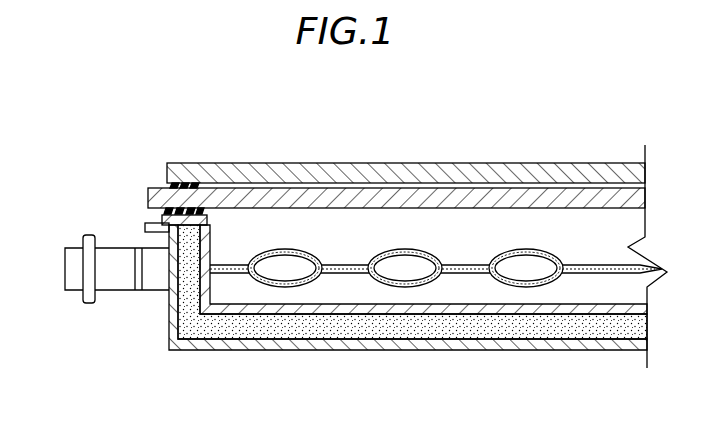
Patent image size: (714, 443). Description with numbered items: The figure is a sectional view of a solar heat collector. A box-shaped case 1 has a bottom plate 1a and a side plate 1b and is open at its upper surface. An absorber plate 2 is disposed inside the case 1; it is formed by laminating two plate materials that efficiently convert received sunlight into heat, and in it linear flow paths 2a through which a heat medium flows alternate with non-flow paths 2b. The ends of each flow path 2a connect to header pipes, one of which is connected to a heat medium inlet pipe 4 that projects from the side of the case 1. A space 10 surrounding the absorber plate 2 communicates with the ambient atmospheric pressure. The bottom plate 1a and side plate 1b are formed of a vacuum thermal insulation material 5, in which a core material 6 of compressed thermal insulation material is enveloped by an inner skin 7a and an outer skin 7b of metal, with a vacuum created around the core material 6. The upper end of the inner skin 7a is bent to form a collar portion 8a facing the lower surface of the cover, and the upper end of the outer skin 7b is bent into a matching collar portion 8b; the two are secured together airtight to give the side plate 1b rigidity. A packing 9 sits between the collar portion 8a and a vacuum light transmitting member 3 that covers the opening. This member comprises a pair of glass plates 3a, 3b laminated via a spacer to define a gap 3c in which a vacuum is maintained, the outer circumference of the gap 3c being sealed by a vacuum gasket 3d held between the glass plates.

The case 1 is at (380, 282).
The bottom plate 1a is at (380, 316).
The side plate 1b is at (166, 308).
The absorber plate 2 is at (436, 202).
The flow path 2a is at (286, 264).
The non-flow path 2b is at (343, 263).
The vacuum light transmitting member 3 is at (373, 150).
The glass plate 3a is at (373, 154).
The glass plate 3b is at (568, 196).
The gap 3c is at (603, 183).
The vacuum gasket 3d is at (168, 183).
The heat medium inlet pipe 4 is at (77, 291).
The vacuum thermal insulation material 5 is at (380, 309).
The core material 6 is at (578, 325).
The inner skin 7a is at (211, 222).
The outer skin 7b is at (168, 337).
The collar portion 8a is at (160, 220).
The collar portion 8b is at (143, 228).
The packing 9 is at (163, 210).
The space 10 is at (580, 240).